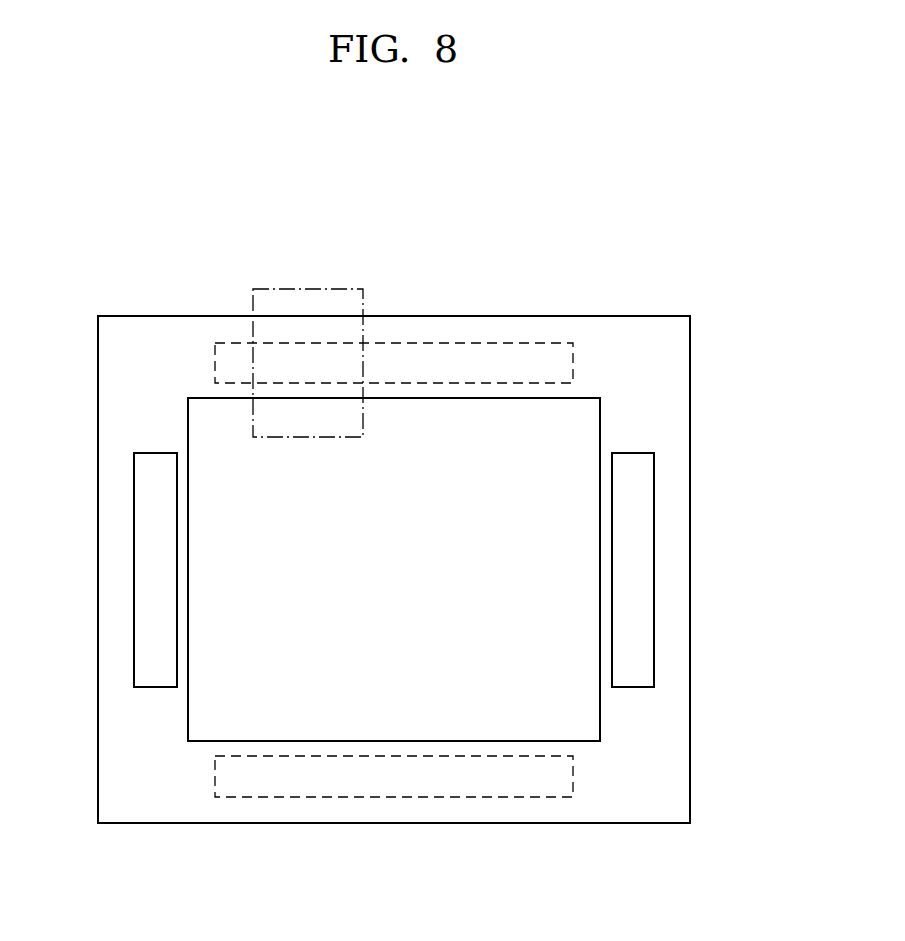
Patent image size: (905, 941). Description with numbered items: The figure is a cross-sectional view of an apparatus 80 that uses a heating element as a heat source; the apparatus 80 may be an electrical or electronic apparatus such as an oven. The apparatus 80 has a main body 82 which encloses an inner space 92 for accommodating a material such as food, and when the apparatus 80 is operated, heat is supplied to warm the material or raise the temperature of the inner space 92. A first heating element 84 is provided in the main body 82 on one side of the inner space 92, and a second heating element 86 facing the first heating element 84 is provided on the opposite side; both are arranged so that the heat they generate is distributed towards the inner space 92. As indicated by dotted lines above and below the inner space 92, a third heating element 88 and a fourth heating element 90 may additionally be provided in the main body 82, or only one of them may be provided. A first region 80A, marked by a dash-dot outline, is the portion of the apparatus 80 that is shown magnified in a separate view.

The apparatus 80 is at (700, 273).
The first region 80A is at (308, 290).
The main body 82 is at (677, 363).
The first heating element 84 is at (140, 571).
The second heating element 86 is at (645, 571).
The third heating element 88 is at (395, 350).
The fourth heating element 90 is at (393, 790).
The inner space 92 is at (410, 582).